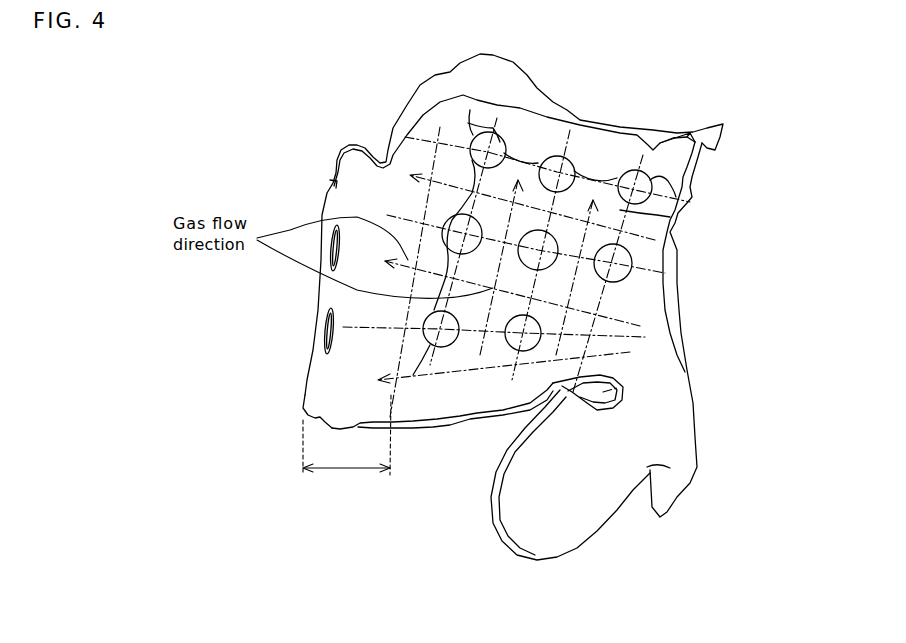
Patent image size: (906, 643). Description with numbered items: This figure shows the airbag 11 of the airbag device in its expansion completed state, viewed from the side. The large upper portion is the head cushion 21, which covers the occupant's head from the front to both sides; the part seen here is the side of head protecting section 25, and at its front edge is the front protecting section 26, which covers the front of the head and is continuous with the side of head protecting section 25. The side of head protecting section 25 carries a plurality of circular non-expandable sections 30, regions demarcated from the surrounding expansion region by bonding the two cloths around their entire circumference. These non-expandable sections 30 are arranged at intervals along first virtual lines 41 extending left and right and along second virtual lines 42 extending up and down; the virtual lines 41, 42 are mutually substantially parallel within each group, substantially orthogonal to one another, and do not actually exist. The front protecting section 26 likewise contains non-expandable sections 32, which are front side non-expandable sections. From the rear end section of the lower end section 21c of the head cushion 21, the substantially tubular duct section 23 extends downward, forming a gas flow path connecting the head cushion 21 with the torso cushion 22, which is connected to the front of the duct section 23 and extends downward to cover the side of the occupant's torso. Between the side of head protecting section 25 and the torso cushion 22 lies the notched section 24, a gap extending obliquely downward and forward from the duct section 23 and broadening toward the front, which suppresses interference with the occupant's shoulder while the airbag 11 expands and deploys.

The airbag 11 is at (602, 65).
The head cushion 21 is at (450, 518).
The lower end section 21c is at (570, 407).
The torso cushion 22 is at (590, 510).
The duct section 23 is at (660, 377).
The notched section 24 is at (630, 388).
The side of head protecting section 25 is at (443, 405).
The front protecting section 26 is at (353, 468).
The non-expandable section 30 is at (566, 168).
The non-expandable section 32 is at (343, 328).
The first virtual line 41 is at (627, 278).
The second virtual line 42 is at (680, 222).